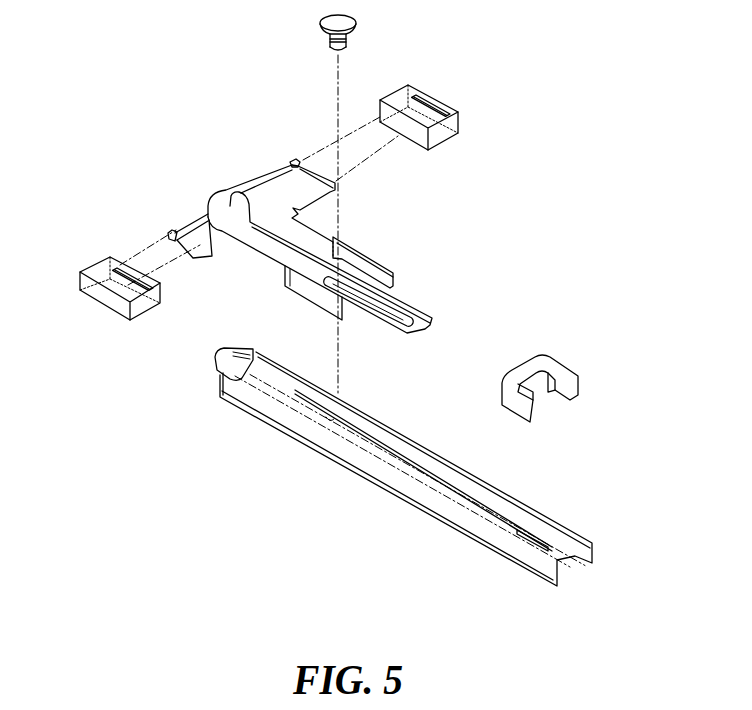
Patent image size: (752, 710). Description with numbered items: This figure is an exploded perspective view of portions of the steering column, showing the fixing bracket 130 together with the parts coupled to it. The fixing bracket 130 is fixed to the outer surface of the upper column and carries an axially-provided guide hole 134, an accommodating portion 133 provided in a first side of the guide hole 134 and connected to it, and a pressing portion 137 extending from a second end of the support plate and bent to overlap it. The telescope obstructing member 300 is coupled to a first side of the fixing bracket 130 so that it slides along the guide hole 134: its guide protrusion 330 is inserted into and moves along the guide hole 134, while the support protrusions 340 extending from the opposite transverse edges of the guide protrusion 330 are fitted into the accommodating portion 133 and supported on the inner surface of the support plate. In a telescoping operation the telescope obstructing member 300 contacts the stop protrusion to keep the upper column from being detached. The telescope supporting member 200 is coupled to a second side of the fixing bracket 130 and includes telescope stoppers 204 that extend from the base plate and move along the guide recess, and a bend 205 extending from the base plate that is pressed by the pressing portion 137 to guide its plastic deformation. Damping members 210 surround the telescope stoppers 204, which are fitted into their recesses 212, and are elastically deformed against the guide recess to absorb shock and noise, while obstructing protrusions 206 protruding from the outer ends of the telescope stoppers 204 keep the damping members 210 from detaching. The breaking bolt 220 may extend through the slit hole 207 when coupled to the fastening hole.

The fixing bracket 130 is at (368, 467).
The accommodating portion 133 is at (537, 547).
The guide hole 134 is at (487, 505).
The pressing portion 137 is at (212, 376).
The telescope supporting member 200 is at (315, 216).
The telescope stoppers 204 is at (270, 182).
The bend 205 is at (266, 247).
The obstructing protrusions 206 is at (292, 163).
The slit hole 207 is at (387, 315).
The damping members 210 is at (436, 133).
The recesses 212 is at (440, 108).
The breaking bolt 220 is at (347, 33).
The telescope obstructing member 300 is at (542, 404).
The guide protrusion 330 is at (547, 398).
The support protrusions 340 is at (507, 380).